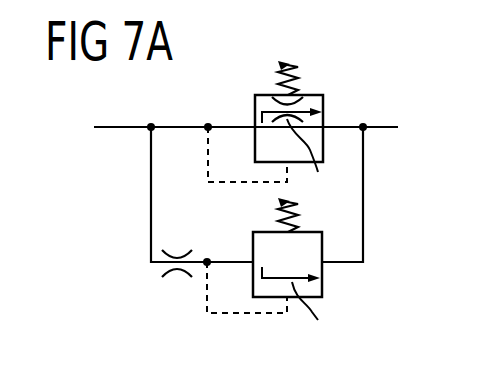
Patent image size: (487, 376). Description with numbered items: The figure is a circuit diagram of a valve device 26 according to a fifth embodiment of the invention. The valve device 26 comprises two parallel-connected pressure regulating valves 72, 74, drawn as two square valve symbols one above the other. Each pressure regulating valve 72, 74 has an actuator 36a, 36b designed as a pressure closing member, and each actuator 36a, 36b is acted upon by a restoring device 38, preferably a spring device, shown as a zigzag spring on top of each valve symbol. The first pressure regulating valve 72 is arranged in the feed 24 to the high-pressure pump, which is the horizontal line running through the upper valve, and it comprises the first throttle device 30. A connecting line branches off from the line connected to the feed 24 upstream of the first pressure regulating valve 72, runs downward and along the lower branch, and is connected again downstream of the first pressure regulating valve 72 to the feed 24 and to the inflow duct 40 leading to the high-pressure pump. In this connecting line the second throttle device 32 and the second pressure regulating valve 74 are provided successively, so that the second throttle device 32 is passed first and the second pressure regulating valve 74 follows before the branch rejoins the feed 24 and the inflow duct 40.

The feed 24 is at (353, 126).
The valve device 26 is at (112, 212).
The first throttle device 30 is at (309, 165).
The second throttle device 32 is at (178, 255).
The actuator 36a is at (266, 97).
The actuator 36b is at (298, 297).
The restoring device 38 is at (298, 78).
The inflow duct 40 is at (387, 130).
The first pressure regulating valve 72 is at (255, 115).
The second pressure regulating valve 74 is at (322, 272).